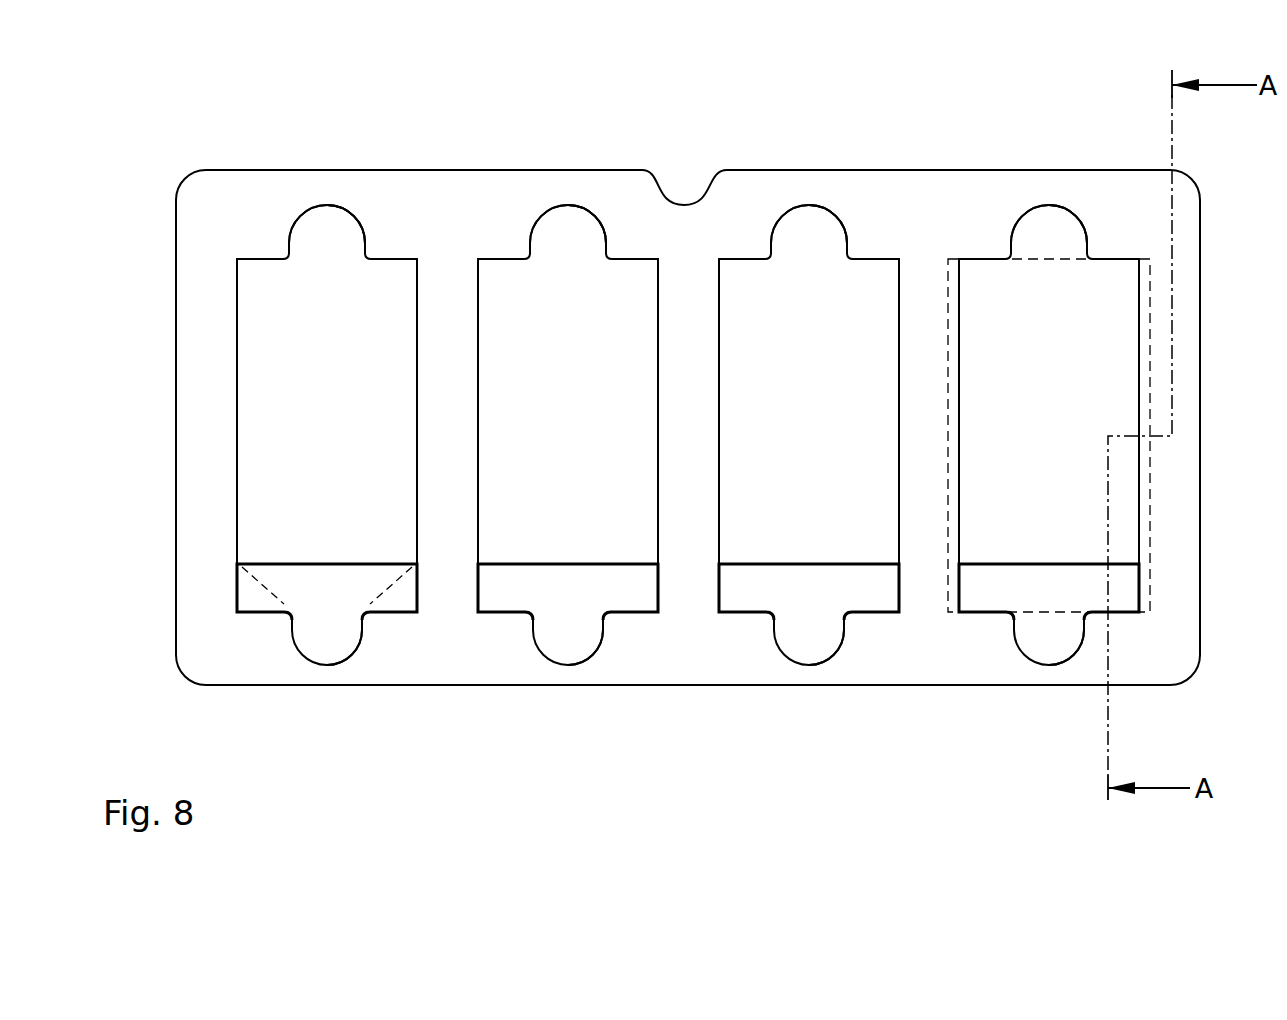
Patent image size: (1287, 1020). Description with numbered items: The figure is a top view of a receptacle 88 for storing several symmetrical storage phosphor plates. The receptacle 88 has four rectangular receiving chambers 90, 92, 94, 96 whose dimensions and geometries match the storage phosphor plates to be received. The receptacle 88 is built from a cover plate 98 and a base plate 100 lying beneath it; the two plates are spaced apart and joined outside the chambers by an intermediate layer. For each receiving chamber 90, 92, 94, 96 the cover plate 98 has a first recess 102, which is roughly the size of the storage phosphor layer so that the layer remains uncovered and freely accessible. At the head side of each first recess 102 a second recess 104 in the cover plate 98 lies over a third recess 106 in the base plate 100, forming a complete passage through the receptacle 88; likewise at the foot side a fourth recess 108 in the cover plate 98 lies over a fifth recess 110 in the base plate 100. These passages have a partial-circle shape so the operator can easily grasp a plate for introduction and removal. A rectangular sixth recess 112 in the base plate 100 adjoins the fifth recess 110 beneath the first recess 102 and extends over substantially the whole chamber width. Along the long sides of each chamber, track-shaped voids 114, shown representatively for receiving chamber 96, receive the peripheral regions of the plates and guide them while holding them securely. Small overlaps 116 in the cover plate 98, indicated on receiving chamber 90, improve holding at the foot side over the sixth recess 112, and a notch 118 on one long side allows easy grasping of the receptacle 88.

The receptacle 88 is at (210, 178).
The receiving chamber 90 is at (258, 254).
The receiving chamber 92 is at (499, 254).
The receiving chamber 94 is at (740, 254).
The receiving chamber 96 is at (981, 254).
The cover plate 98 is at (450, 673).
The base plate 100 is at (689, 697).
The first recess 102 is at (410, 280).
The second recess 104 is at (323, 222).
The third recess 106 is at (357, 214).
The fourth recess 108 is at (312, 650).
The fifth recess 110 is at (355, 662).
The sixth recess 112 is at (316, 573).
The track-shaped void 114 is at (953, 258).
The overlap 116 is at (252, 602).
The notch 118 is at (692, 186).